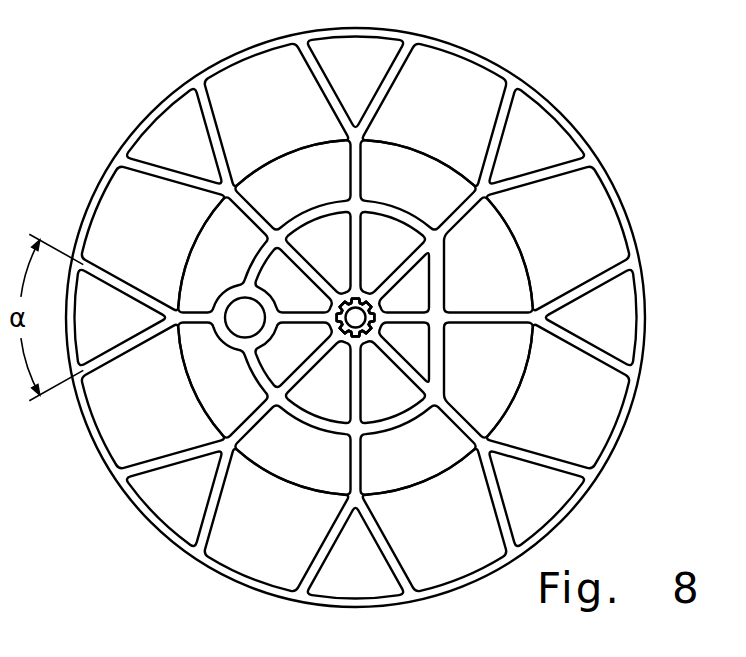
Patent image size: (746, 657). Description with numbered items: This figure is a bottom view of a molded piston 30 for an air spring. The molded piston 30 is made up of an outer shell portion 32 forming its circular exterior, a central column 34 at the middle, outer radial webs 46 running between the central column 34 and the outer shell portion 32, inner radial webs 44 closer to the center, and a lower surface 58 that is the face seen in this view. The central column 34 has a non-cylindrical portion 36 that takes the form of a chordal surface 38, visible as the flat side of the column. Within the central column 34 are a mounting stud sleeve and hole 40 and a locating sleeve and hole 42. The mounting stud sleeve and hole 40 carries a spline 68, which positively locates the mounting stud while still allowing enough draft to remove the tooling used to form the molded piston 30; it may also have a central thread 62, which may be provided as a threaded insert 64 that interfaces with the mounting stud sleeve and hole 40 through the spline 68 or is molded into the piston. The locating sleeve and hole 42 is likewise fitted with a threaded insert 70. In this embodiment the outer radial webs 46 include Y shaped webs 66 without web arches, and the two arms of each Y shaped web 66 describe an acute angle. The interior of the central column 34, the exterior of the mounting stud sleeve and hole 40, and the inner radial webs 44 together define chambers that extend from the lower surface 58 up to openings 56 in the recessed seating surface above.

The molded piston 30 is at (543, 97).
The outer shell portion 32 is at (580, 135).
The central column 34 is at (398, 203).
The non-cylindrical portion 36 is at (445, 268).
The chordal surface 38 is at (445, 372).
The mounting stud sleeve and hole 40 is at (350, 336).
The locating sleeve and hole 42 is at (230, 303).
The inner radial webs 44 is at (363, 393).
The outer radial webs 46 is at (343, 163).
The openings 56 is at (320, 233).
The lower surface 58 is at (153, 521).
The central thread 62 is at (374, 311).
The threaded insert 64 is at (340, 329).
The Y shaped webs 66 is at (610, 353).
The spline 68 is at (374, 325).
The threaded insert 70 is at (240, 298).